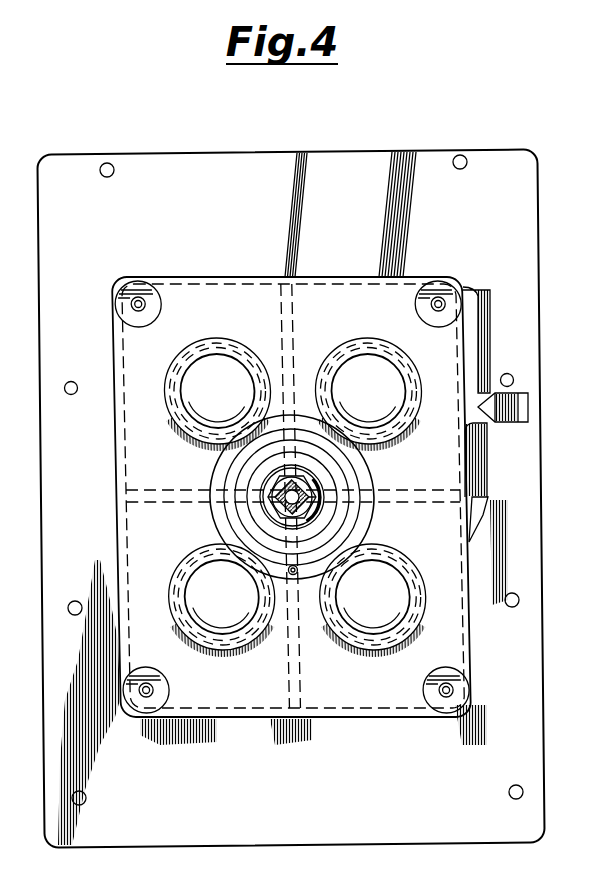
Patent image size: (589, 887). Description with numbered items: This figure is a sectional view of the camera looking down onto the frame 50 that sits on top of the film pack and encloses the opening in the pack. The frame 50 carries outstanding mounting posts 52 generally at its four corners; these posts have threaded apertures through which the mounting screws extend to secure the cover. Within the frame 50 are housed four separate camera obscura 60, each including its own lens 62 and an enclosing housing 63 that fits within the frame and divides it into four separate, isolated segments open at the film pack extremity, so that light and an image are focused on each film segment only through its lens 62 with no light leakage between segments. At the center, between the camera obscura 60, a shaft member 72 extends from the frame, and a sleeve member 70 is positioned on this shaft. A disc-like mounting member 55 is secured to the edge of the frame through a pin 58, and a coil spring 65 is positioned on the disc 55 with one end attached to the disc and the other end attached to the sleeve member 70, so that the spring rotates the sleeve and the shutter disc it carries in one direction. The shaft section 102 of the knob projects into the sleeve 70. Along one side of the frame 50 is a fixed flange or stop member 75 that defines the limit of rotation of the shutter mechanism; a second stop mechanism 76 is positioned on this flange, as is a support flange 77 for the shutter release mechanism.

The frame 50 is at (467, 318).
The mounting posts 52 is at (450, 280).
The disc-like mounting member 55 is at (365, 518).
The pin 58 is at (289, 571).
The camera obscura 60 is at (397, 357).
The lens 62 is at (358, 373).
The enclosing housing 63 is at (295, 333).
The coil spring 65 is at (227, 475).
The sleeve member 70 is at (327, 497).
The shaft member 72 is at (277, 507).
The fixed flange or stop member 75 is at (478, 370).
The second stop mechanism 76 is at (488, 508).
The support flange 77 is at (529, 407).
The shaft section 102 is at (310, 492).